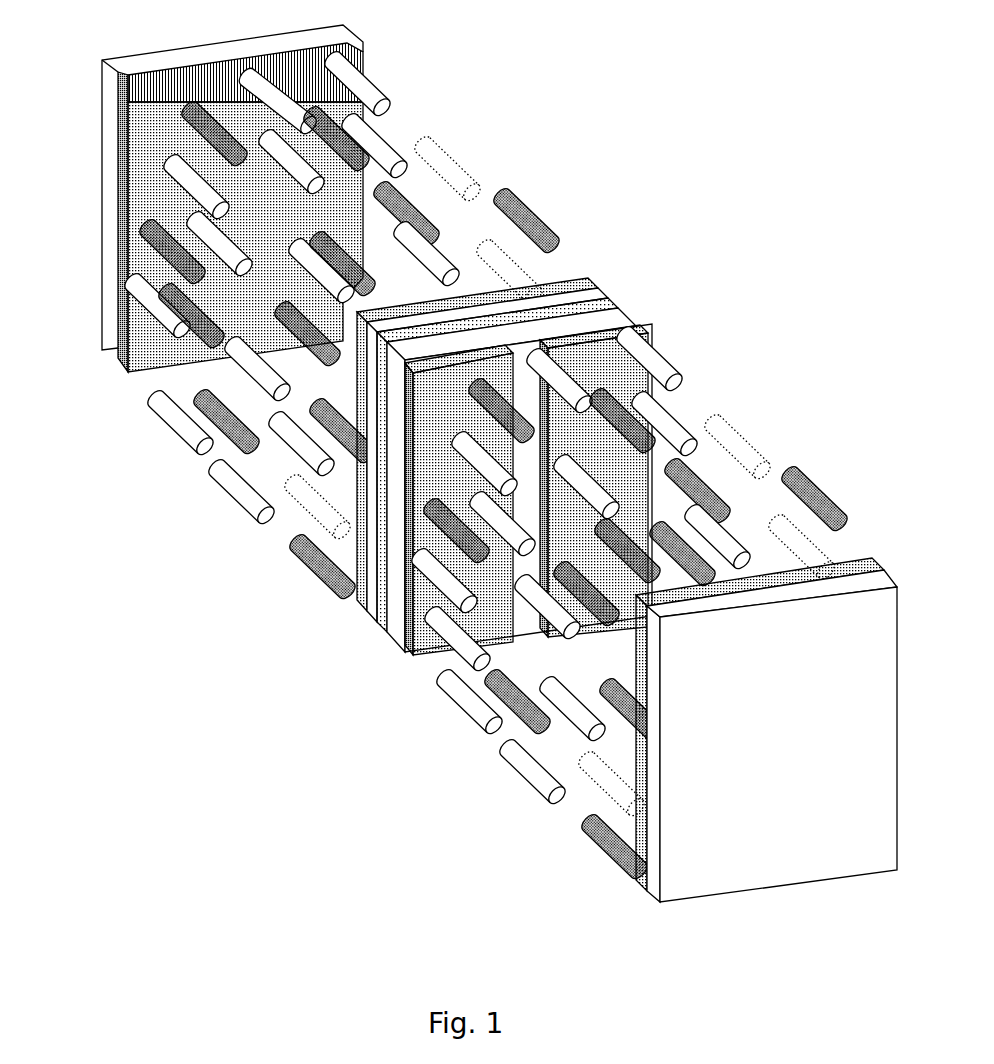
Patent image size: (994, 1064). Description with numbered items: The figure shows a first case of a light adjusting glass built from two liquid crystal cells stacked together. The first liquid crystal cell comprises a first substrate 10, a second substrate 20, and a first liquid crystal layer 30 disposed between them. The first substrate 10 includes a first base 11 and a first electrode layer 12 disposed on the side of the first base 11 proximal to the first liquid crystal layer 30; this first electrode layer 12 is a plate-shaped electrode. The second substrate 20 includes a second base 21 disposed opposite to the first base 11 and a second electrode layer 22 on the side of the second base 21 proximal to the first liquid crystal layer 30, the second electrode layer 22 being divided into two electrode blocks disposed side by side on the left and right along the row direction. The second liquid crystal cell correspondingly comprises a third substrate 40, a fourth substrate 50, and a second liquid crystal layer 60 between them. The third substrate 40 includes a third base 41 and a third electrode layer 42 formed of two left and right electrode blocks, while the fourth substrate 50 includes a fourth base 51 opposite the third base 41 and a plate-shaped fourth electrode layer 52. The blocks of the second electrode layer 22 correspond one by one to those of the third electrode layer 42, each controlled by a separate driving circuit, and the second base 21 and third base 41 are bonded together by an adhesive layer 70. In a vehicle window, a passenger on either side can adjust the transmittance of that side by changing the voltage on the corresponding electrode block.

The first substrate 10 is at (207, 200).
The first base 11 is at (107, 352).
The first electrode layer 12 is at (128, 370).
The second substrate 20 is at (479, 489).
The second base 21 is at (365, 613).
The second electrode layer 22 is at (357, 598).
The first liquid crystal layer 30 is at (350, 325).
The third substrate 40 is at (505, 506).
The third base 41 is at (402, 643).
The third electrode layer 42 is at (407, 657).
The fourth substrate 50 is at (750, 737).
The fourth base 51 is at (660, 893).
The fourth electrode layer 52 is at (638, 880).
The second liquid crystal layer 60 is at (634, 603).
The adhesive layer 70 is at (380, 630).